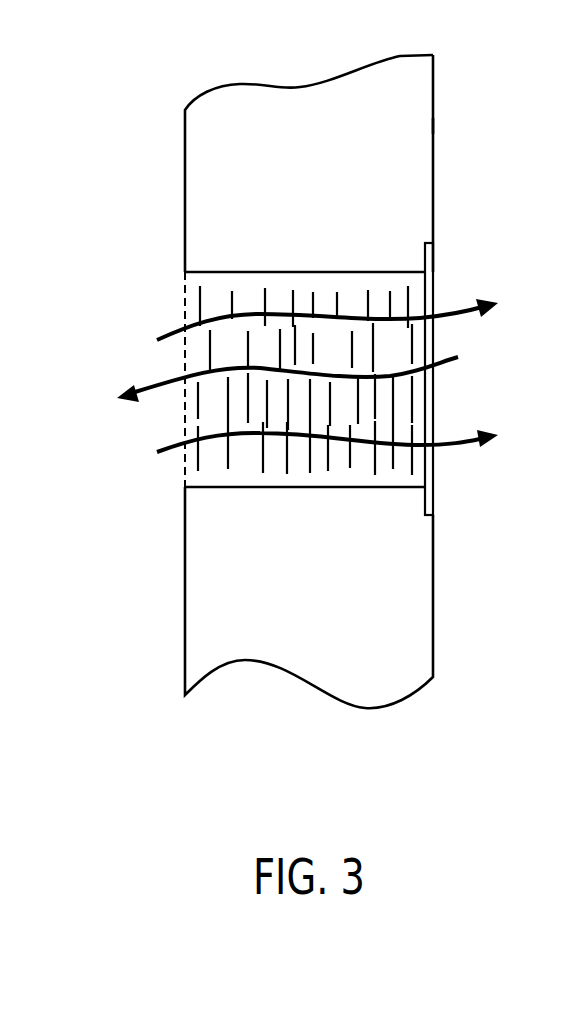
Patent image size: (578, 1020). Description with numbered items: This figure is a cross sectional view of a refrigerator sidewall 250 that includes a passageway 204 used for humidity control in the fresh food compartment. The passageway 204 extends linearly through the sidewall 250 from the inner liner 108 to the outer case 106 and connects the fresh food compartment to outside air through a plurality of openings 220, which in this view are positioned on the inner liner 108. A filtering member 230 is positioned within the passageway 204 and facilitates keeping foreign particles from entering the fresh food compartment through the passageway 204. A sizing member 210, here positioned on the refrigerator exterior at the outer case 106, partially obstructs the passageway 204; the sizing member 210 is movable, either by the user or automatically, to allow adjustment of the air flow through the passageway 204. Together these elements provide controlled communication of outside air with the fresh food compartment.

The inner liner 108 is at (185, 171).
The outer case 106 is at (435, 172).
The exterior sidewall 250 is at (440, 123).
The sizing member 210 is at (438, 385).
The openings 220 is at (182, 402).
The filtering member 230 is at (205, 287).
The passageway 204 is at (174, 474).